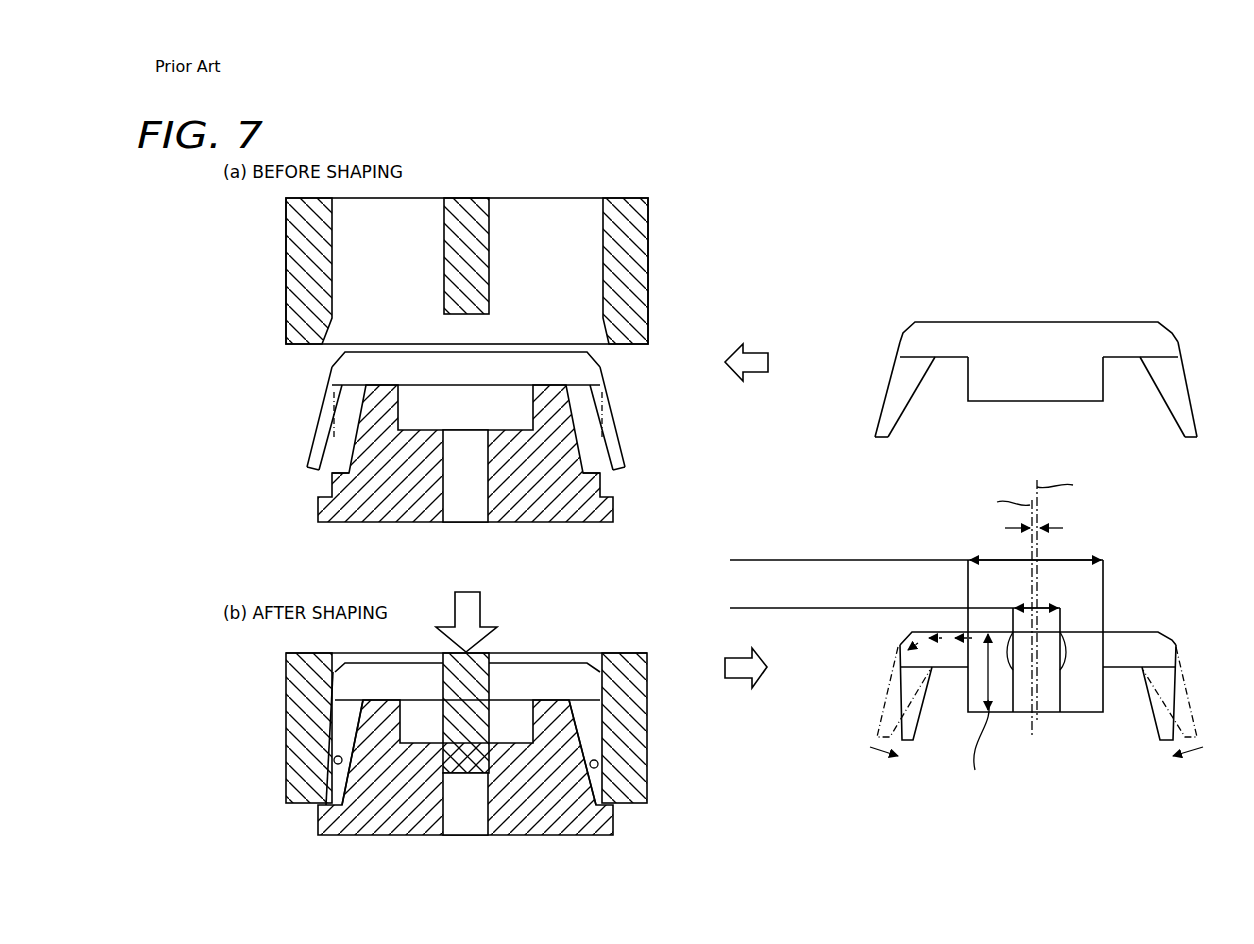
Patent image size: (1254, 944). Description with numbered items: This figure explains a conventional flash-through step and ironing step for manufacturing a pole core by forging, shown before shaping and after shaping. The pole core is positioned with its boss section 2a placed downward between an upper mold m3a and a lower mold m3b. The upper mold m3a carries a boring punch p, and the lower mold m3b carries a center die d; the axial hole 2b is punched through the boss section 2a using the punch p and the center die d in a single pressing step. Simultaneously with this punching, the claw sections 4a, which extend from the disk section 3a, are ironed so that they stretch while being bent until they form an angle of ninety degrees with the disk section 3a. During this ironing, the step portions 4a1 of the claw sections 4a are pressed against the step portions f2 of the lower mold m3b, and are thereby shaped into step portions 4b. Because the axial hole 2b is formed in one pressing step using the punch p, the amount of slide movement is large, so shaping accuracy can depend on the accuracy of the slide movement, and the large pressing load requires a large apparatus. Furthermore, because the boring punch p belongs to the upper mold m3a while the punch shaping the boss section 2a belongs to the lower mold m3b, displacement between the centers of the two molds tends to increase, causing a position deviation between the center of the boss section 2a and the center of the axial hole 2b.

The upper mold m3a is at (643, 262).
The lower mold m3b is at (615, 510).
The punch p is at (488, 296).
The center die d is at (445, 438).
The disk section 3a is at (385, 364).
The claw sections 4a is at (345, 402).
The step portions of the claw sections 4a1 is at (322, 447).
The step portions of the lower mold f2 is at (323, 474).
The boss section 2a is at (511, 420).
The axial hole 2b is at (470, 780).
The step portions 4b is at (335, 763).